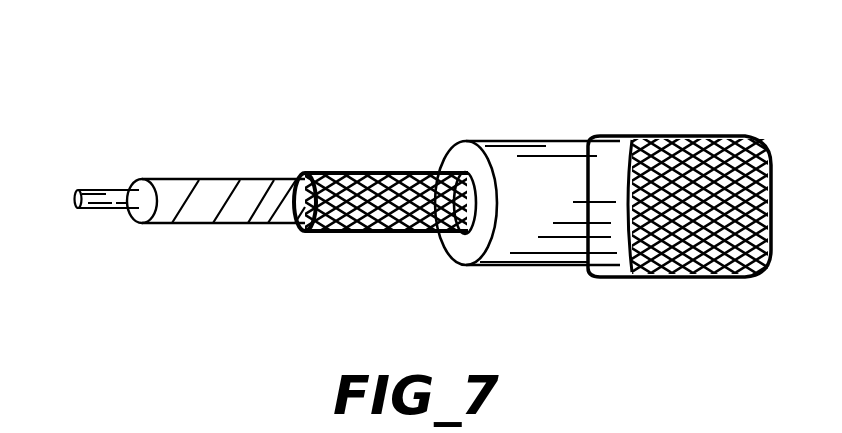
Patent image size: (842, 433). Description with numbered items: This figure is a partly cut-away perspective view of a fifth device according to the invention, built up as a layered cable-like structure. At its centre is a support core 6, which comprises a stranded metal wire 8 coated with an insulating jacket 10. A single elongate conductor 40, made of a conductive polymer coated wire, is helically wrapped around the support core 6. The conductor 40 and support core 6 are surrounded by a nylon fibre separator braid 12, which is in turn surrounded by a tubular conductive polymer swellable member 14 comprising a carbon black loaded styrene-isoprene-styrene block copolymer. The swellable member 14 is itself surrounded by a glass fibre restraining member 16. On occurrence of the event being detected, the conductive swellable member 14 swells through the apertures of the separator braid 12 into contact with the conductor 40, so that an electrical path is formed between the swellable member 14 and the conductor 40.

The support core 6 is at (175, 170).
The stranded metal wire 8 is at (110, 212).
The elongate conductor 40 is at (243, 208).
The insulating jacket 10 is at (308, 176).
The separator braid 12 is at (403, 228).
The swellable member 14 is at (553, 178).
The restraining member 16 is at (674, 232).